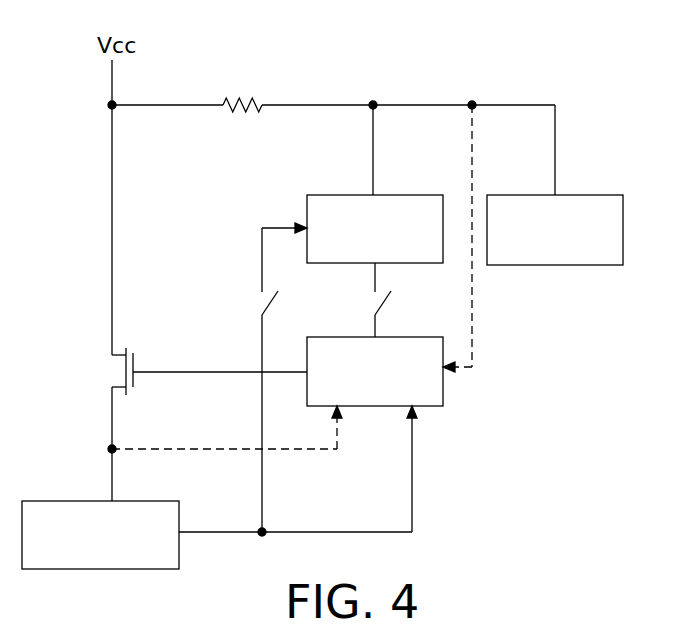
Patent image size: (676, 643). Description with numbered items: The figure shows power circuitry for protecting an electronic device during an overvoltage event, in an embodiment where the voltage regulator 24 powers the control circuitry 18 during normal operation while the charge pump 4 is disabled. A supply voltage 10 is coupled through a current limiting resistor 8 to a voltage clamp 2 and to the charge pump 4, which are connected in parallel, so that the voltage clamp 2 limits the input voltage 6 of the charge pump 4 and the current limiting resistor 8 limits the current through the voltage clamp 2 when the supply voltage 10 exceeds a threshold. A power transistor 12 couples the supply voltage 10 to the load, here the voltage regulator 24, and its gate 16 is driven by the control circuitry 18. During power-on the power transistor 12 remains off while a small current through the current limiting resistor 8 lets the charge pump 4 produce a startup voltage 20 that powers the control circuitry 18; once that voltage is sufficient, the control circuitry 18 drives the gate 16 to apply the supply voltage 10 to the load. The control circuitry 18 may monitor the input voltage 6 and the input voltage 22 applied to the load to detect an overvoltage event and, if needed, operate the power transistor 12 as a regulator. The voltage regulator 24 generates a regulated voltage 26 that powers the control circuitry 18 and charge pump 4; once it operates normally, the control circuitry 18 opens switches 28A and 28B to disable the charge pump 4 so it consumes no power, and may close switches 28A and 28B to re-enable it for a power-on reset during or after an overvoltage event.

The voltage clamp 2 is at (588, 265).
The charge pump 4 is at (405, 263).
The input voltage 6 is at (372, 152).
The current limiting resistor 8 is at (267, 84).
The supply voltage 10 is at (113, 85).
The power transistor 12 is at (141, 334).
The gate 16 is at (221, 371).
The control circuitry 18 is at (430, 406).
The startup voltage 20 is at (374, 278).
The input voltage 22 is at (113, 426).
The voltage regulator 24 is at (140, 569).
The regulated voltage 26 is at (210, 531).
The switch 28A is at (290, 304).
The switch 28B is at (402, 304).